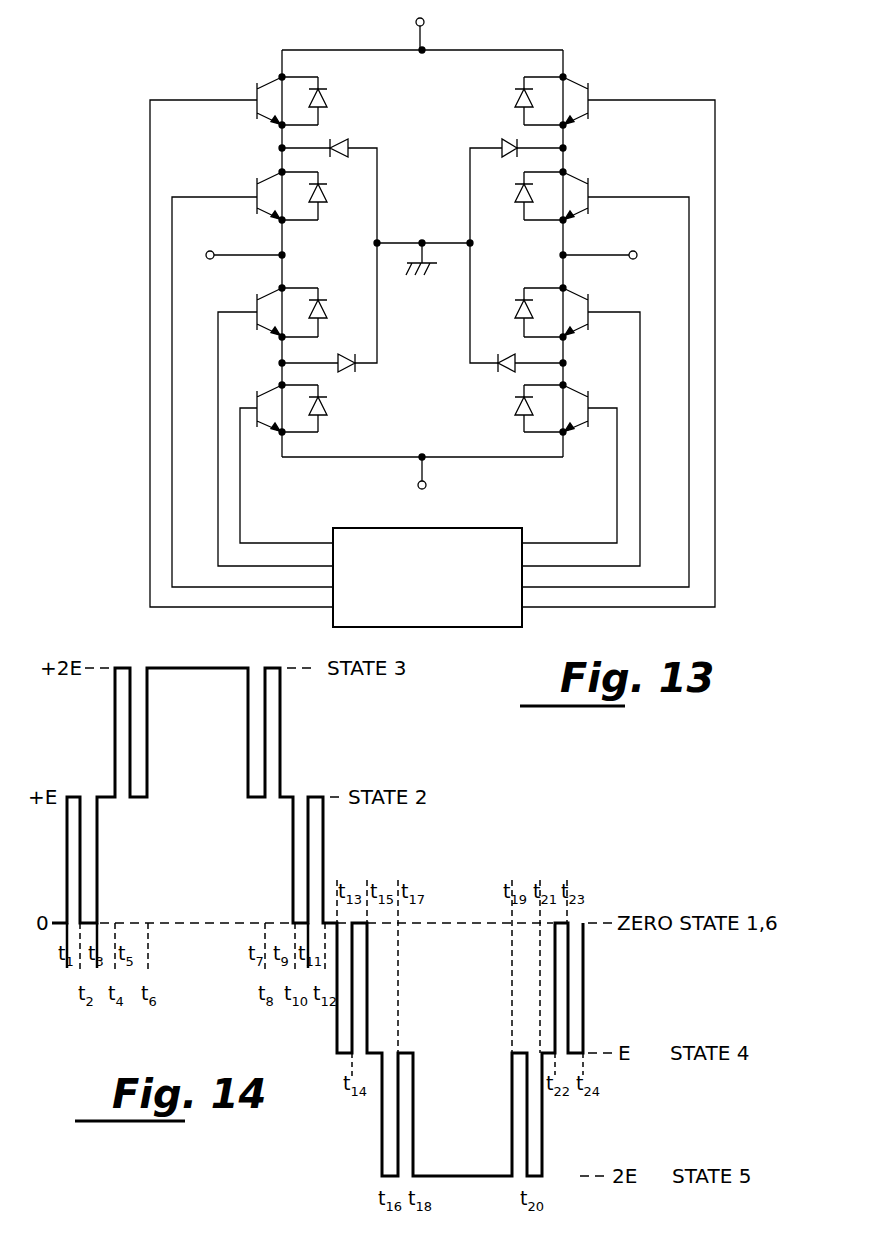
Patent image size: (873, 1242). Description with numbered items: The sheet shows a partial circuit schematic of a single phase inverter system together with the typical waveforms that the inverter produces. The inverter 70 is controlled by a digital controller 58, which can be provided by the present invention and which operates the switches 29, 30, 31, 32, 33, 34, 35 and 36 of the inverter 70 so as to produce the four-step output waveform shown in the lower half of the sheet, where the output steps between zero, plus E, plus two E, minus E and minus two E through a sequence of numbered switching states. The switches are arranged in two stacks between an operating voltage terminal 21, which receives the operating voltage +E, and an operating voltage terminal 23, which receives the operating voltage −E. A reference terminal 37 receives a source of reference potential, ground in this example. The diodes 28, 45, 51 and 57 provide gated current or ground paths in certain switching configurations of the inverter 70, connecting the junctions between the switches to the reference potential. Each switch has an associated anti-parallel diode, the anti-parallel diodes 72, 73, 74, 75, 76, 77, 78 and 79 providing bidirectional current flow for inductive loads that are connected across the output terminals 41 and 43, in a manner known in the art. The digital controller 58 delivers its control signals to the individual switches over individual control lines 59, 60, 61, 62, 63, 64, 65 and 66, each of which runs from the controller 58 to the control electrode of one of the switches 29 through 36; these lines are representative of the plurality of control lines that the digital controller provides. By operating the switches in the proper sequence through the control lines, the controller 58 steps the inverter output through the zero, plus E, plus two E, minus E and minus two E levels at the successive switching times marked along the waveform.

The operating voltage terminal 21 is at (425, 20).
The operating voltage terminal 23 is at (428, 488).
The diode 28 is at (340, 138).
The switch 29 is at (287, 101).
The switch 30 is at (287, 196).
The switch 31 is at (556, 101).
The switch 32 is at (556, 196).
The switch 33 is at (287, 312).
The switch 34 is at (287, 408).
The switch 35 is at (556, 312).
The switch 36 is at (556, 408).
The reference terminal 37 is at (422, 240).
The output terminal 41 is at (210, 250).
The output terminal 43 is at (637, 251).
The diode 45 is at (510, 141).
The diode 51 is at (366, 372).
The diode 57 is at (500, 374).
The controller 58 is at (491, 528).
The control line 59 is at (148, 506).
The control line 60 is at (196, 586).
The control line 61 is at (718, 507).
The control line 62 is at (662, 586).
The control line 63 is at (260, 565).
The control line 64 is at (308, 543).
The control line 65 is at (576, 566).
The control line 66 is at (546, 543).
The inverter 70 is at (412, 173).
The anti-parallel diode 72 is at (330, 90).
The anti-parallel diode 73 is at (328, 204).
The anti-parallel diode 74 is at (516, 89).
The anti-parallel diode 75 is at (518, 204).
The anti-parallel diode 76 is at (325, 302).
The anti-parallel diode 77 is at (333, 414).
The anti-parallel diode 78 is at (517, 298).
The anti-parallel diode 79 is at (520, 418).